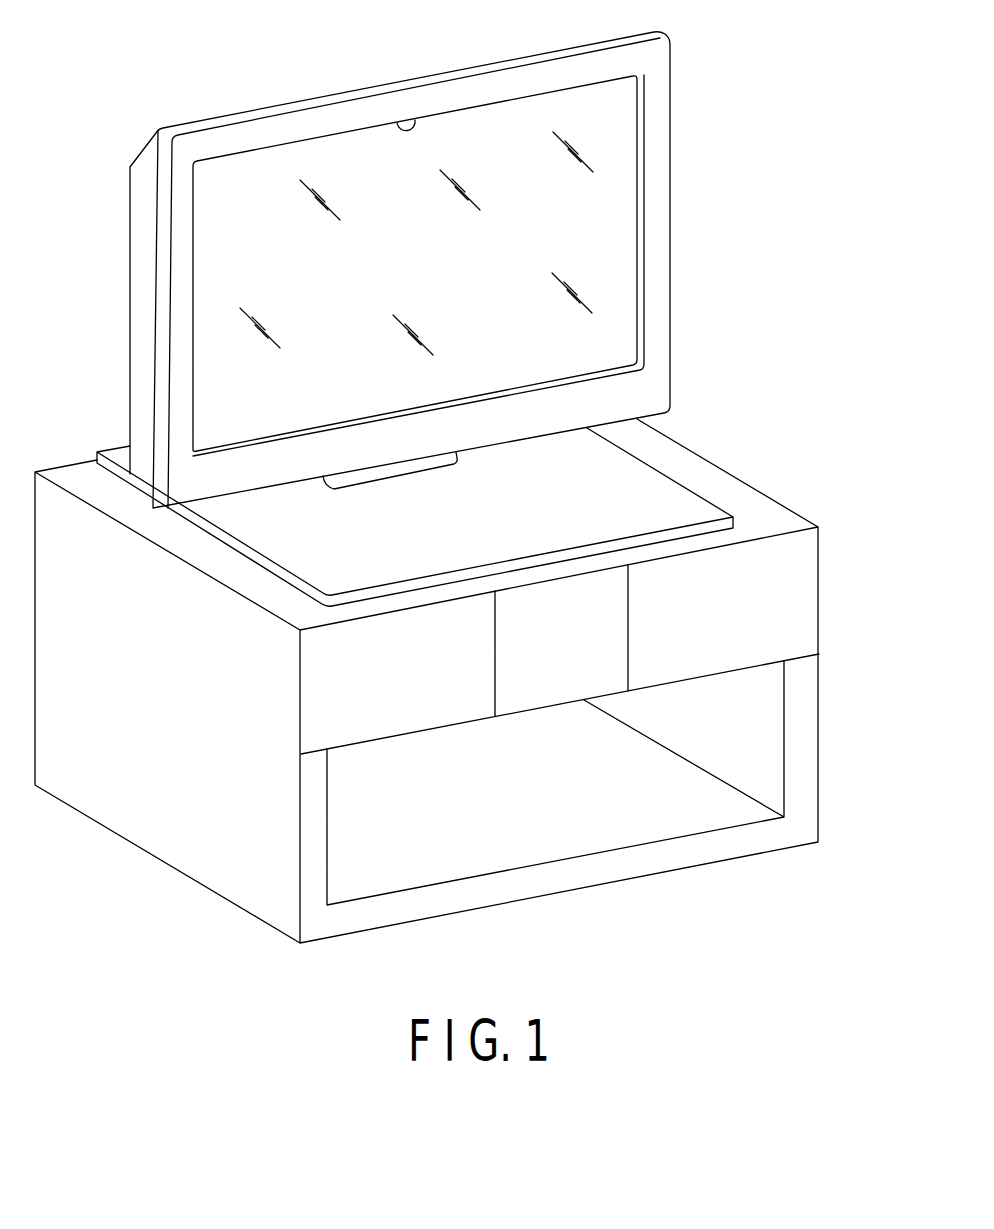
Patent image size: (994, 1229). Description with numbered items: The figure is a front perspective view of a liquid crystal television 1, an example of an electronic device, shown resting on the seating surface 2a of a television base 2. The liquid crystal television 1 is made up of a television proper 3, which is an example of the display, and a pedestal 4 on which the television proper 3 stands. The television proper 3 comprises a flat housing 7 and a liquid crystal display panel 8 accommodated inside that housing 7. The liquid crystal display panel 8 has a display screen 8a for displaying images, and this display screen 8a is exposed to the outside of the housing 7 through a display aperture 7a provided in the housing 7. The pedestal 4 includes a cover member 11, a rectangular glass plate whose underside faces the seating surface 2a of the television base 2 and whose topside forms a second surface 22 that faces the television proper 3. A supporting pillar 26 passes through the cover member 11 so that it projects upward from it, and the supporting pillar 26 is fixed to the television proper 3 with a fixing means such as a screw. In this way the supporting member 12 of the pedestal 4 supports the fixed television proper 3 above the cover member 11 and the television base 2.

The liquid crystal television 1 is at (435, 278).
The television base 2 is at (442, 681).
The seating surface 2a is at (751, 464).
The television proper 3 is at (435, 254).
The pedestal 4 is at (670, 503).
The housing 7 is at (342, 117).
The display aperture 7a is at (410, 127).
The liquid crystal display panel 8 is at (620, 202).
The display screen 8a is at (610, 245).
The cover member 11 is at (278, 538).
The supporting member 12 is at (390, 475).
The second surface 22 is at (310, 558).
The supporting pillar 26 is at (432, 467).